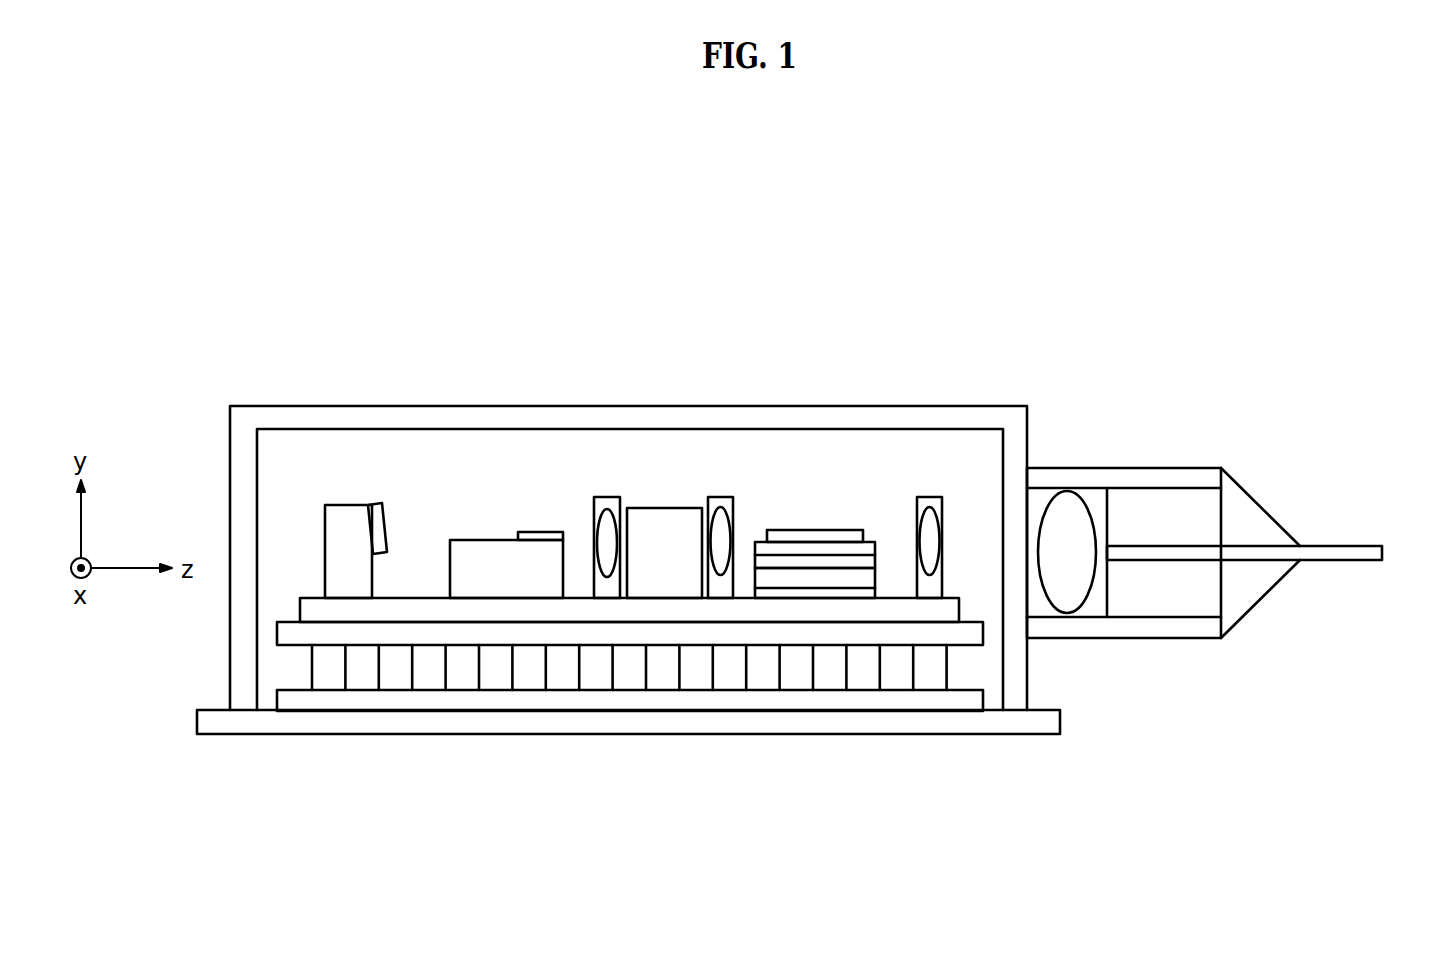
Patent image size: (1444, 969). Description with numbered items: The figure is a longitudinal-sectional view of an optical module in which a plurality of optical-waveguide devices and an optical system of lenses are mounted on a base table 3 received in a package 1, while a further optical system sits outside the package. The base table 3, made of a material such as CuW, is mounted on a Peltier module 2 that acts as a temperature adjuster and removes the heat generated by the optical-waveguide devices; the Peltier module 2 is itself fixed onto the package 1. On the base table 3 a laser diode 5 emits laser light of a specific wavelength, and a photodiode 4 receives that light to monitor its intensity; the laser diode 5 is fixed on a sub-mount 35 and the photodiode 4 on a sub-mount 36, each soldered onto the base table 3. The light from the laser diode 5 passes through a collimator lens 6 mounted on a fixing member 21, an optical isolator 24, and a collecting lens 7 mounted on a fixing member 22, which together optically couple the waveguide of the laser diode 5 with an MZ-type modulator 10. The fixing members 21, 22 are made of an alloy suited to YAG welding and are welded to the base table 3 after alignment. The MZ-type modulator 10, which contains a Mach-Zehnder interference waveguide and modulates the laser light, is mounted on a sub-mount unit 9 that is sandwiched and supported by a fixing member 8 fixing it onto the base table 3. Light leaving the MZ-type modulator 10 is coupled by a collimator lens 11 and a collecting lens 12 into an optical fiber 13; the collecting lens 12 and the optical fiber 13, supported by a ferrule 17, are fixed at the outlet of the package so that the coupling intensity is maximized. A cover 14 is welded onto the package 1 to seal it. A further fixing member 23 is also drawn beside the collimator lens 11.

The package 1 is at (292, 742).
The Peltier module 2 is at (410, 699).
The base table 3 is at (543, 613).
The photodiode 4 is at (356, 402).
The laser diode 5 is at (493, 420).
The collimator lens 6 is at (597, 587).
The collecting lens 7 is at (874, 425).
The fixing member 8 is at (775, 577).
The sub-mount unit 9 is at (830, 550).
The MZ-type modulator 10 is at (850, 535).
The collimator lens 11 is at (1131, 441).
The collecting lens 12 is at (1065, 503).
The optical fiber 13 is at (1315, 563).
The cover 14 is at (1022, 410).
The ferrule 17 is at (1155, 598).
The fixing member 21 is at (537, 533).
The fixing member 22 is at (735, 568).
The fixing member 23 is at (960, 572).
The optical isolator 24 is at (682, 507).
The sub-mount 35 is at (381, 505).
The sub-mount 36 is at (337, 517).